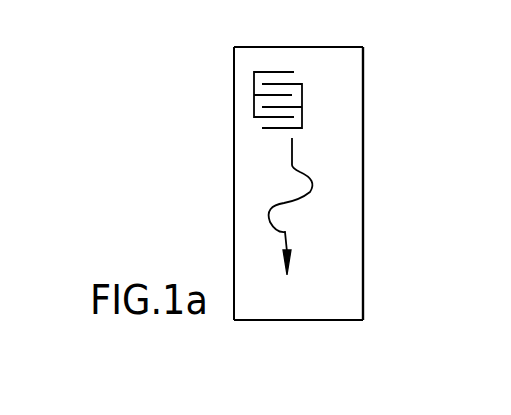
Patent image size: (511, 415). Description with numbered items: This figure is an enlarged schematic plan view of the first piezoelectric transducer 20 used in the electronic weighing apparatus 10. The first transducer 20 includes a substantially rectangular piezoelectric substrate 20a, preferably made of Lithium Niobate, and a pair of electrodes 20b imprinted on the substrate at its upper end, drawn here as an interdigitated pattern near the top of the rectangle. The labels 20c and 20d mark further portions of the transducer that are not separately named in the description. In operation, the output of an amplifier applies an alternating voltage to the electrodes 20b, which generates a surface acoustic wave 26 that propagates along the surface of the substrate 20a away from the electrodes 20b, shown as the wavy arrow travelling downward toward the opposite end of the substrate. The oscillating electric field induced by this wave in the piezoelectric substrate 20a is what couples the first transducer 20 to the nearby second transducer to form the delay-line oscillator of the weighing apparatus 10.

The electronic weighing apparatus 10 is at (132, 35).
The first piezoelectric transducer 20 is at (233, 233).
The piezoelectric substrate 20a is at (345, 227).
The pair of electrodes 20b is at (313, 112).
The substrate bottom edge 20c is at (313, 321).
The substrate top edge 20d is at (313, 47).
The surface acoustic wave 26 is at (325, 183).